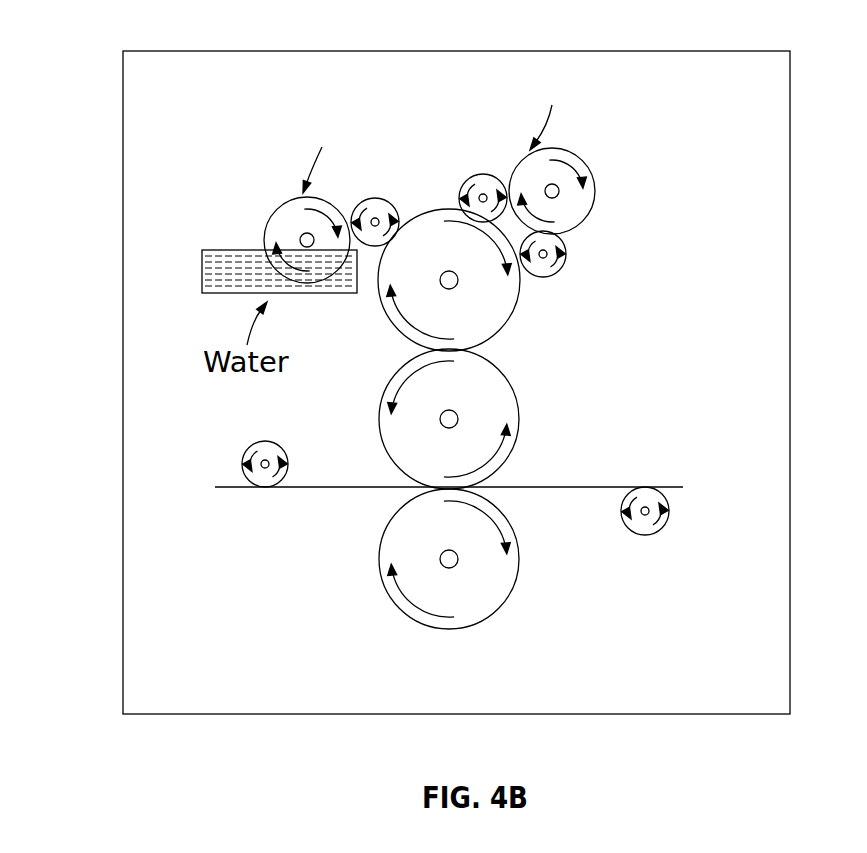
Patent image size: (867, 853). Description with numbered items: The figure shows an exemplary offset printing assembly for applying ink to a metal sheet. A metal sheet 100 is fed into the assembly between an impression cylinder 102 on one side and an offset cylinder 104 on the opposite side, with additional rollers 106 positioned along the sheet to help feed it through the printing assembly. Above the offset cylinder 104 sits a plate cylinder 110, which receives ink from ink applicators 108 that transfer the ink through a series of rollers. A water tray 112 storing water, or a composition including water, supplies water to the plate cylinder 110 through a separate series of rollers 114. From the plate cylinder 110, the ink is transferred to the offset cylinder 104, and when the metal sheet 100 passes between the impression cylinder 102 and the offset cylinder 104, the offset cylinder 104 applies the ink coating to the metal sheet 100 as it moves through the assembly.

The water tray 112 is at (108, 40).
The rollers 114 is at (250, 211).
The ink applicators 108 is at (606, 197).
The plate cylinder 110 is at (523, 318).
The offset cylinder 104 is at (535, 413).
The impression cylinder 102 is at (530, 583).
The metal sheet 100 is at (330, 492).
The additional rollers 106 is at (242, 476).